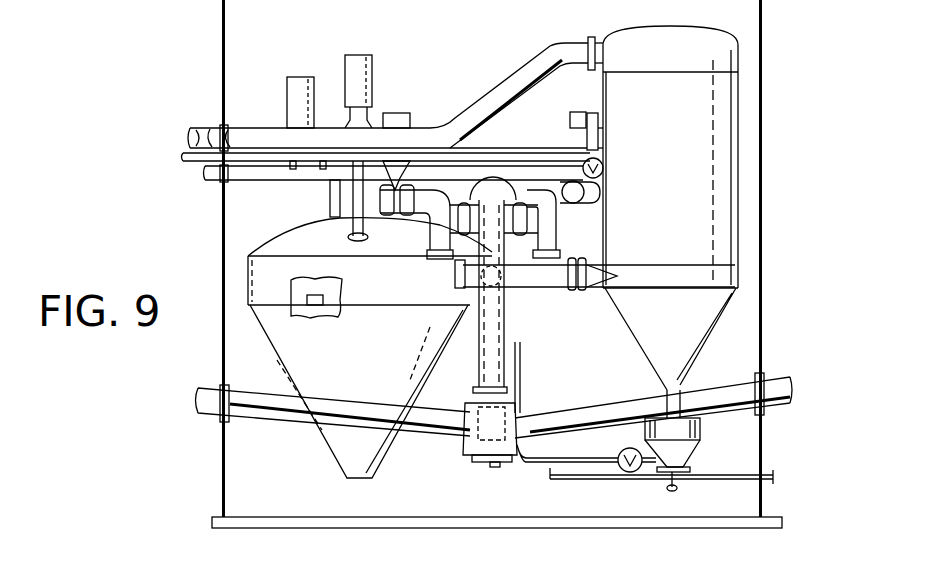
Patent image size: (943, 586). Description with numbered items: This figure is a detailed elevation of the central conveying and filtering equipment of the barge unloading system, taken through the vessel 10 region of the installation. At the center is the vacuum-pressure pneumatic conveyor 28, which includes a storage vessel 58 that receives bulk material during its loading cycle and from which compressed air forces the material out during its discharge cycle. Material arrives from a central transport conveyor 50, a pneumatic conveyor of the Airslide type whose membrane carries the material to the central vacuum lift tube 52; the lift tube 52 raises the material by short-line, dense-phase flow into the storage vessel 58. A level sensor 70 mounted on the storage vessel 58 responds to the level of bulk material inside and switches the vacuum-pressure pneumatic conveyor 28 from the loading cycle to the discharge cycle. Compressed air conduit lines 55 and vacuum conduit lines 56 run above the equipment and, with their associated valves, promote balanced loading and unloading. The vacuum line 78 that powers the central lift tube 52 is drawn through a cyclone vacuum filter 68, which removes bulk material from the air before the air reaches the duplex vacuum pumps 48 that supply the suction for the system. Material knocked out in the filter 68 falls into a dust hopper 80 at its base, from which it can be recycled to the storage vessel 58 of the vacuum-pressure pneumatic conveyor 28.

The frame 10 is at (153, 8).
The vacuum-pressure pneumatic conveyor 28 is at (268, 238).
The duplex vacuum pump 48 is at (428, 240).
The central transport conveyor 50 is at (258, 423).
The central vacuum lift tube 52 is at (477, 347).
The compressed air conduit line 55 is at (350, 232).
The vacuum conduit line 56 is at (512, 78).
The storage vessel 58 is at (397, 352).
The cyclone vacuum filter 68 is at (740, 162).
The level sensor 70 is at (313, 305).
The vacuum line 78 is at (577, 236).
The dust hopper 80 is at (697, 450).